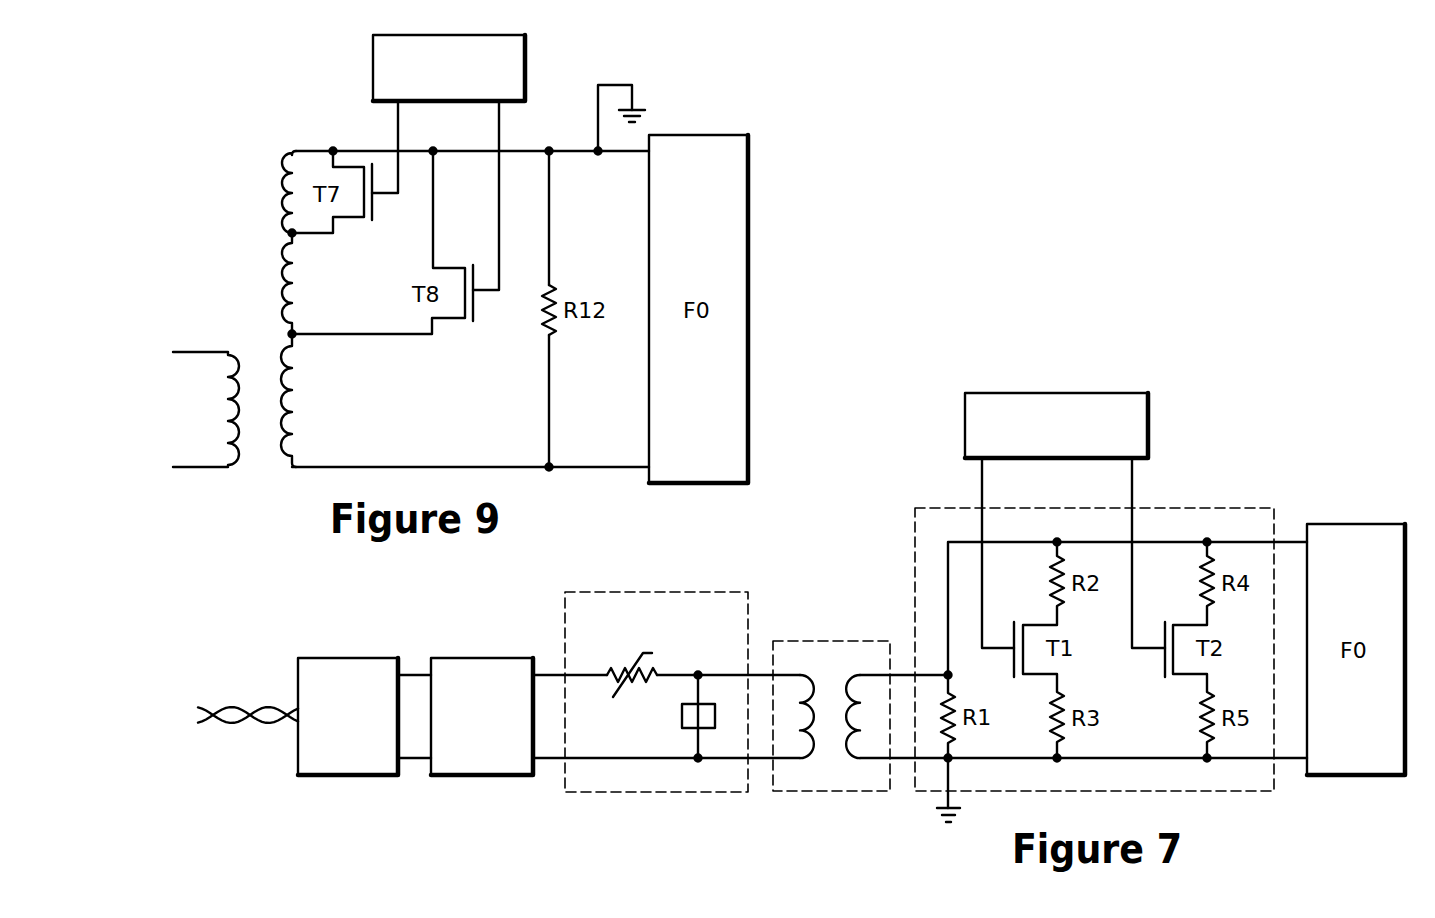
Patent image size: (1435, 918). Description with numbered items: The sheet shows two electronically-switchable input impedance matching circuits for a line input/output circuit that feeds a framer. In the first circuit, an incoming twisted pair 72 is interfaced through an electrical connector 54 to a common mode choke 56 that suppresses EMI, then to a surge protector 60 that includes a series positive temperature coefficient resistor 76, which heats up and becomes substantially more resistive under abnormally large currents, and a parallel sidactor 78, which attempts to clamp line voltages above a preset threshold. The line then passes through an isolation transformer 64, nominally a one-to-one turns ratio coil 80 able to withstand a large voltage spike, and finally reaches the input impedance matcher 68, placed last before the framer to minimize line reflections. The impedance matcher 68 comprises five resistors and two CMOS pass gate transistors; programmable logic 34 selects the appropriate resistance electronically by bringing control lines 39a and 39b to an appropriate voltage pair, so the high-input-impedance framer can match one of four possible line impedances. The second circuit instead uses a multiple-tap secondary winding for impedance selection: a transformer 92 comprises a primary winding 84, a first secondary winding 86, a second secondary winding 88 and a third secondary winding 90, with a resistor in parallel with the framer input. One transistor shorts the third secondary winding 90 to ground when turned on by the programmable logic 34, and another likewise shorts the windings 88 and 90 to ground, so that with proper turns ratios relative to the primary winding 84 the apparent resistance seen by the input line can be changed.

In FIG. 9, the programmable logic 34 is at (464, 79).
In FIG. 7, the programmable logic 34 is at (1073, 439).
In FIG. 9, the control line 39a is at (394, 126).
In FIG. 7, the control line 39a is at (982, 483).
In FIG. 9, the control line 39b is at (499, 124).
In FIG. 7, the control line 39b is at (1133, 483).
In FIG. 9, the third secondary winding 90 is at (282, 178).
In FIG. 9, the second secondary winding 88 is at (284, 278).
In FIG. 9, the first secondary winding 86 is at (297, 392).
In FIG. 9, the primary winding 84 is at (225, 393).
In FIG. 9, the transformer 92 is at (273, 422).
In FIG. 7, the twisted pair 72 is at (232, 706).
In FIG. 7, the electrical connector 54 is at (364, 729).
In FIG. 7, the common mode choke 56 is at (496, 729).
In FIG. 7, the surge protector 60 is at (716, 592).
In FIG. 7, the positive temperature coefficient resistor 76 is at (620, 664).
In FIG. 7, the sidactor 78 is at (682, 717).
In FIG. 7, the isolation transformer 64 is at (866, 641).
In FIG. 7, the coil 80 is at (847, 729).
In FIG. 7, the input impedance matcher 68 is at (1250, 508).